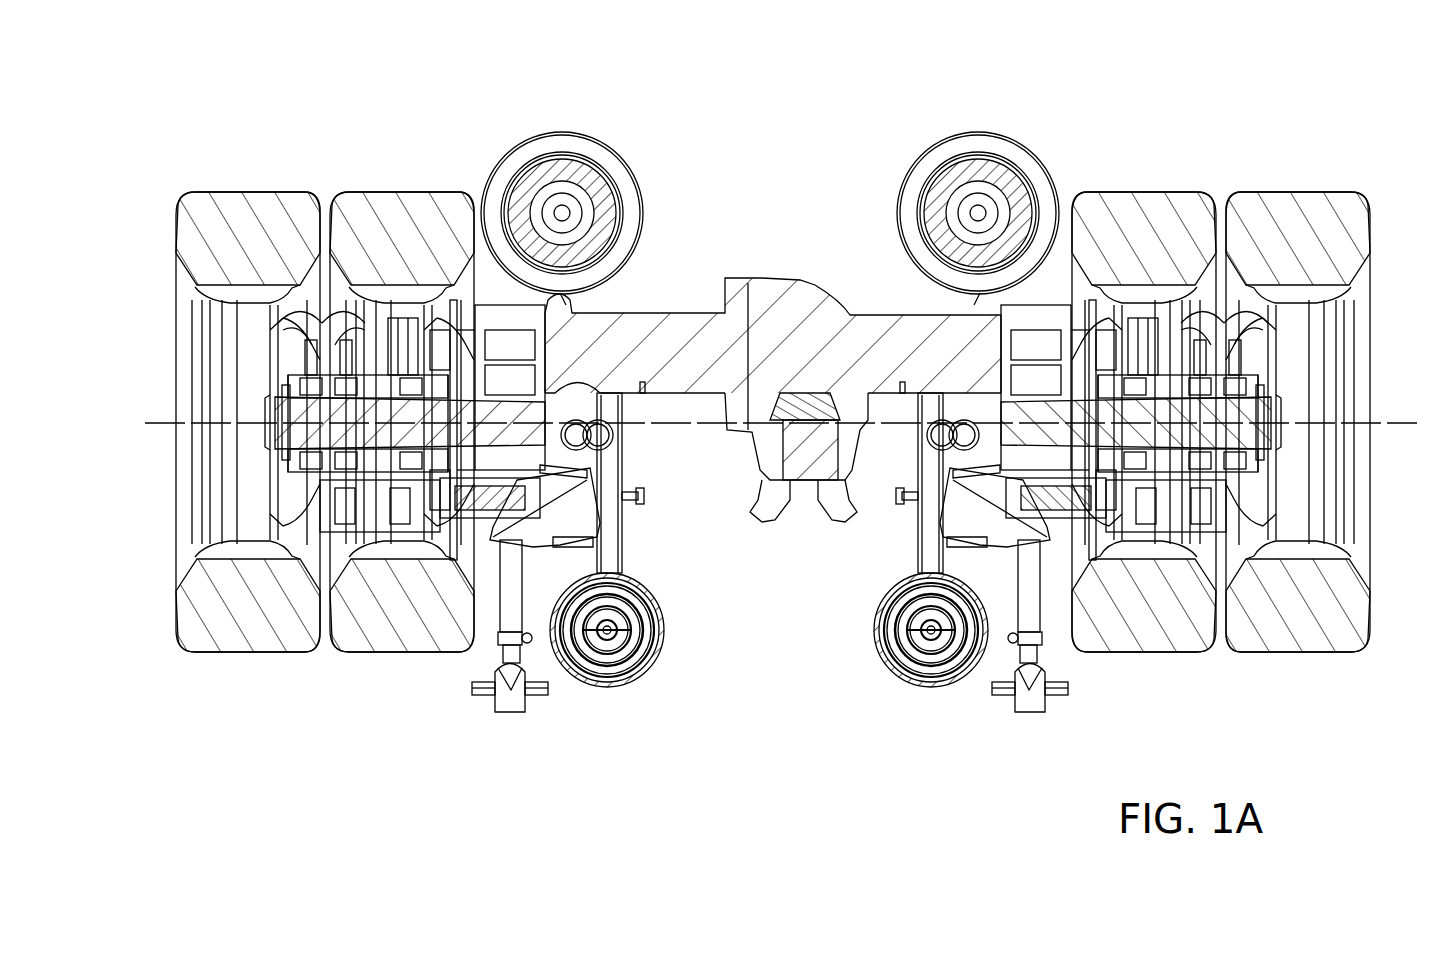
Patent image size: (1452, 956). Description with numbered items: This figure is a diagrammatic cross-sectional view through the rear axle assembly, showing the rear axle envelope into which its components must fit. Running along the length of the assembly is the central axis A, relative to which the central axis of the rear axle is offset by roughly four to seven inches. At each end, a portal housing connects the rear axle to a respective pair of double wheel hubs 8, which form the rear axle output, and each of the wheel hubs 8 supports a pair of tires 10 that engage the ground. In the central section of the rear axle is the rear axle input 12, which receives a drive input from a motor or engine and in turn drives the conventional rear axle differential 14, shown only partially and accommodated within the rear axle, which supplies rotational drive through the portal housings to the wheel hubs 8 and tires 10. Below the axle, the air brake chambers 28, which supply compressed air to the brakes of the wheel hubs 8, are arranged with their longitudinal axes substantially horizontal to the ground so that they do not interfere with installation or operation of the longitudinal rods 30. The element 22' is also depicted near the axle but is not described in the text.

The double wheel hub 8 is at (425, 318).
The tire 10 is at (225, 197).
The rear axle input 12 is at (826, 510).
The rear axle differential 14 is at (812, 392).
The upper wheel 22' is at (770, 165).
The air brake chamber 28 is at (587, 522).
The longitudinal rod 30 is at (508, 603).
The central axis A is at (1388, 422).